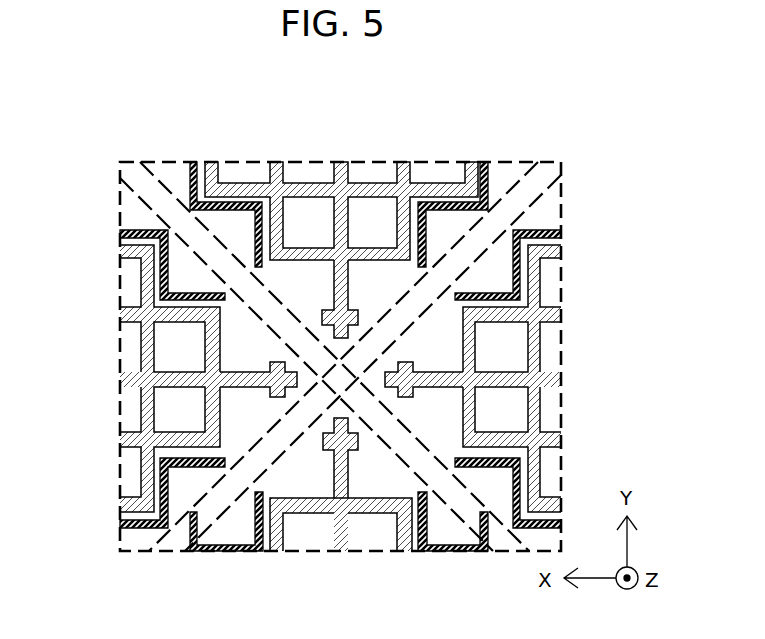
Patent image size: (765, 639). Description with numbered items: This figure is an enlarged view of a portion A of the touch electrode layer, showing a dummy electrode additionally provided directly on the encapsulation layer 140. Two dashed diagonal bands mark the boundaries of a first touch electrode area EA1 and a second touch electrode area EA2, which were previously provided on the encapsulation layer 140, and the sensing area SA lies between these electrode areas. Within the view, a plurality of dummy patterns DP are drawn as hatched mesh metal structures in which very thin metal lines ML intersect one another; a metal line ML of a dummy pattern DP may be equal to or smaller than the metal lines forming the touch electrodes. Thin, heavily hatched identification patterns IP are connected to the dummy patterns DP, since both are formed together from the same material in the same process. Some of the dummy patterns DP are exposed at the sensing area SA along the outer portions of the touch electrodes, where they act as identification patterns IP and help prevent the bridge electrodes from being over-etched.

The encapsulation layer 140 is at (561, 166).
The portion A is at (70, 128).
The first touch electrode area EA1 is at (517, 182).
The second touch electrode area EA2 is at (538, 199).
The sensing area SA is at (167, 199).
The dummy pattern DP is at (313, 178).
The metal line ML is at (403, 162).
The identification pattern IP is at (191, 170).